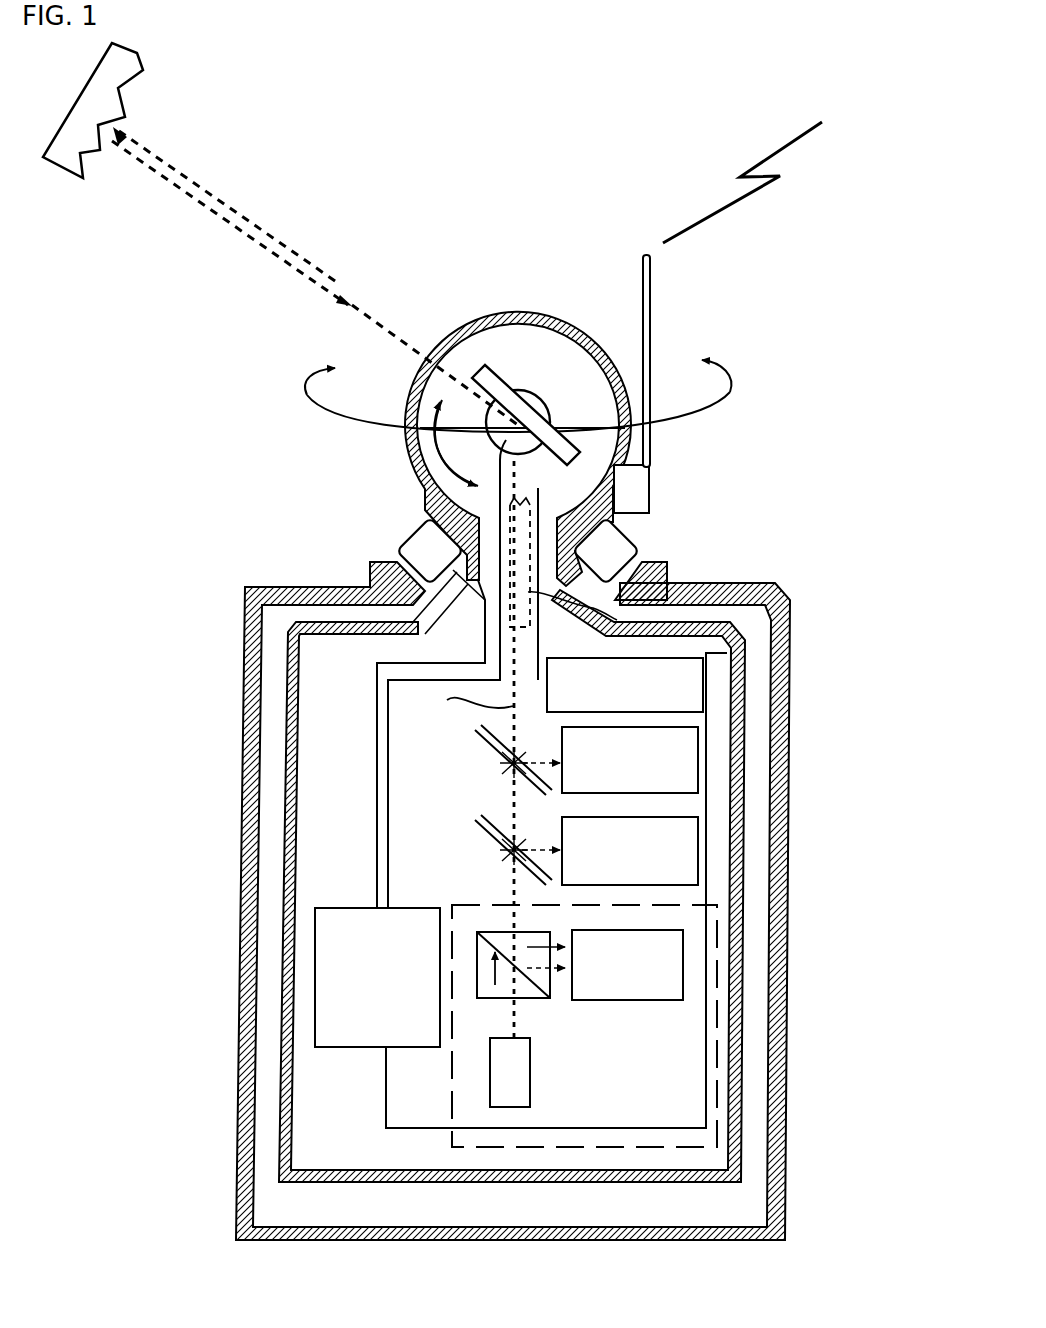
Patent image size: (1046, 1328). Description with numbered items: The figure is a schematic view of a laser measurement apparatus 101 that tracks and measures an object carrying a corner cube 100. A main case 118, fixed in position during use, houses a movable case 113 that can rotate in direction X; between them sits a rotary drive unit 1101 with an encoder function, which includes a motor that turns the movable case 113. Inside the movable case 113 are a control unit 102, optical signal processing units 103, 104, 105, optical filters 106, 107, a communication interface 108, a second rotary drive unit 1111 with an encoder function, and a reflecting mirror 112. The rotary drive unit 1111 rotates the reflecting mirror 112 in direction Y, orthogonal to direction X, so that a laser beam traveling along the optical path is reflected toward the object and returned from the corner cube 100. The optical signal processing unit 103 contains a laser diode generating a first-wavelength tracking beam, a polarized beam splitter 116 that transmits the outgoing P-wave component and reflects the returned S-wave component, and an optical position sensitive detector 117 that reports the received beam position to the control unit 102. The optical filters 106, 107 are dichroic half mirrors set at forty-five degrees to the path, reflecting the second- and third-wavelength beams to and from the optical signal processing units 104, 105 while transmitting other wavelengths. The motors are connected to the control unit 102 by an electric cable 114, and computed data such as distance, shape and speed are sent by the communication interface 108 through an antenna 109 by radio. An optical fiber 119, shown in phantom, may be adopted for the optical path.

The corner cube 100 is at (133, 75).
The laser measurement apparatus 101 is at (232, 477).
The control unit 102 is at (323, 957).
The optical signal processing unit 103 is at (672, 1062).
The optical signal processing unit 104 is at (705, 735).
The optical signal processing unit 105 is at (705, 822).
The optical filter 106 is at (478, 742).
The optical filter 107 is at (478, 826).
The communication interface 108 is at (705, 655).
The antenna 109 is at (650, 273).
The rotary drive unit 1101 is at (428, 548).
The rotary drive unit 1111 is at (538, 407).
The reflecting mirror 112 is at (480, 376).
The movable case 113 is at (410, 462).
The electric cable 114 is at (380, 870).
The polarized beam splitter 116 is at (487, 1003).
The optical position sensitive detector 117 is at (684, 962).
The main case 118 is at (242, 997).
The optical fiber 119 is at (668, 572).